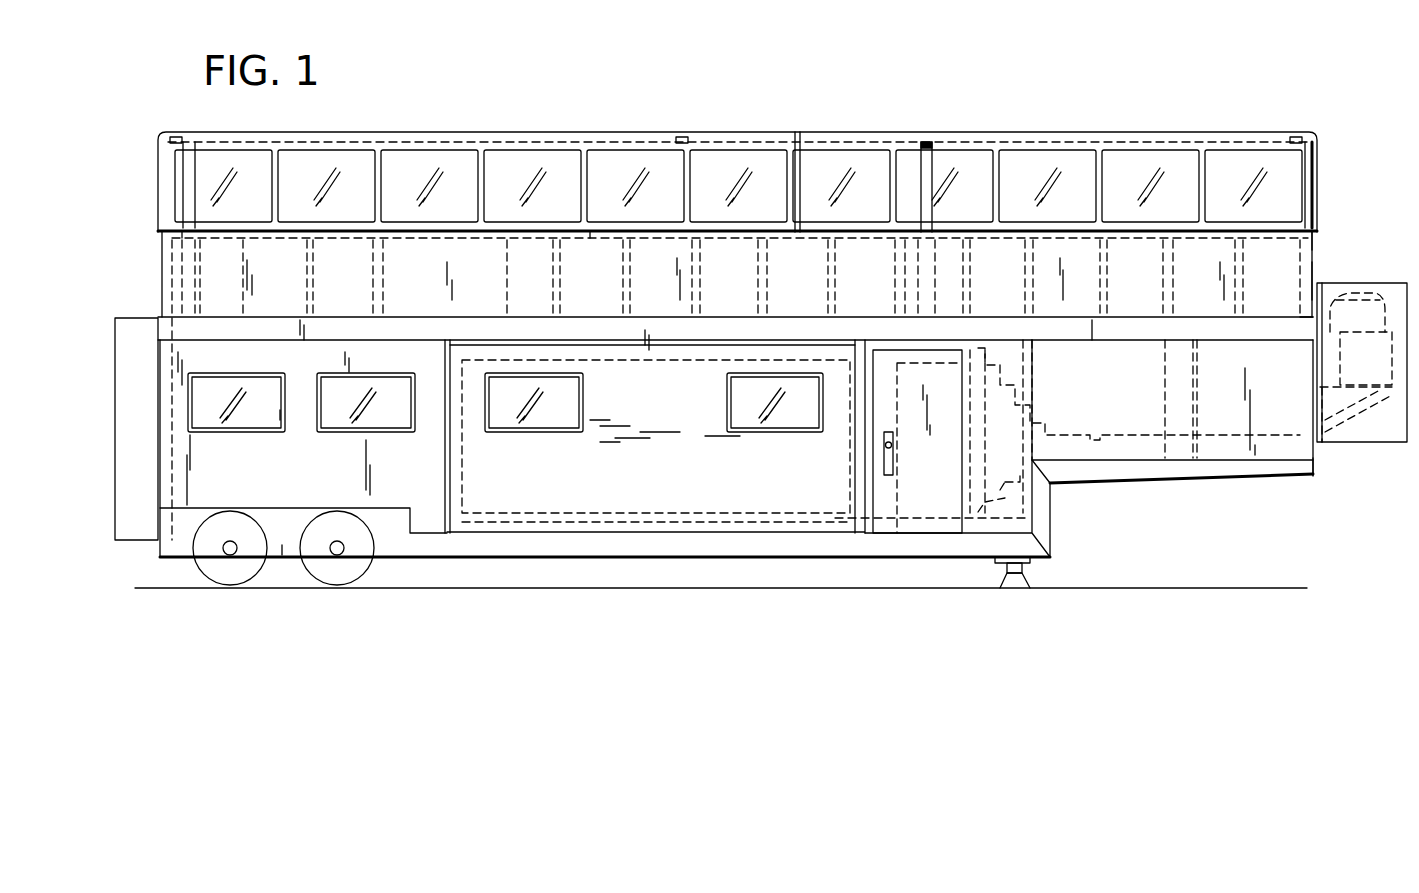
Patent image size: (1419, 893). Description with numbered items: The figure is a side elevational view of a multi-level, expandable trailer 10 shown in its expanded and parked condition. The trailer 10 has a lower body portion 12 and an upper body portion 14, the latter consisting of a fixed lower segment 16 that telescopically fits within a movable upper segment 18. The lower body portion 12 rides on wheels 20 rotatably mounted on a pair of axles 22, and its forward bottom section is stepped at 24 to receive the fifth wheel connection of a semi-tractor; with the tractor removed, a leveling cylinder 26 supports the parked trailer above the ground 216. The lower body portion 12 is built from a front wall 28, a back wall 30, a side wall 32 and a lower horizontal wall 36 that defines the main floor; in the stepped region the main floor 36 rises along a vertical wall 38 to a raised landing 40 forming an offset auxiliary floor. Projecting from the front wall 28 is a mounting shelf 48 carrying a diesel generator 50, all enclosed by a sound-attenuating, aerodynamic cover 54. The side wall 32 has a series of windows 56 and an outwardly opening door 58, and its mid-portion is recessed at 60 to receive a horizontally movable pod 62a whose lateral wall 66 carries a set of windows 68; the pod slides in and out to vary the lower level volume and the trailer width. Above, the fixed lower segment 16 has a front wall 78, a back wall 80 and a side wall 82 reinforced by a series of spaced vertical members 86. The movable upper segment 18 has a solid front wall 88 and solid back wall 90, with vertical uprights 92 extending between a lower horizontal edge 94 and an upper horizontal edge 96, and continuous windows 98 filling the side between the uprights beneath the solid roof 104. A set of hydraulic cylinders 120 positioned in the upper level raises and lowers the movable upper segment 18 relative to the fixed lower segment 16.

The multi-level, expandable trailer 10 is at (923, 103).
The lower body portion 12 is at (1312, 482).
The upper body portion 14 is at (1323, 237).
The fixed lower segment 16 is at (1319, 264).
The movable upper segment 18 is at (1299, 116).
The wheels 20 is at (340, 580).
The axles 22 is at (336, 558).
The stepped section 24 is at (1228, 478).
The leveling cylinder 26 is at (1026, 576).
The front wall 28 is at (1314, 456).
The back wall 30 is at (158, 374).
The side wall 32 is at (419, 482).
The lower horizontal wall 36 is at (890, 525).
The vertical wall 38 is at (1052, 494).
The raised landing 40 is at (1118, 434).
The mounting shelf 48 is at (1358, 414).
The diesel generator 50 is at (1370, 305).
The sound-attenuating, aerodynamic cover 54 is at (1407, 350).
The windows 56 is at (258, 432).
The outwardly opening door 58 is at (933, 512).
The recess 60 is at (667, 350).
The horizontally movable pod 62a is at (598, 534).
The lateral wall 66 is at (656, 441).
The windows 68 is at (803, 434).
The front wall 78 is at (1313, 281).
The back wall 80 is at (162, 286).
The side wall 82 is at (773, 295).
The spaced vertical members 86 is at (830, 313).
The front wall 88 is at (1318, 188).
The back wall 90 is at (162, 206).
The vertical uprights 92 is at (434, 178).
The lower horizontal edge 94 is at (605, 226).
The upper horizontal edge 96 is at (1168, 126).
The continuous windows 98 is at (730, 170).
The solid roof 104 is at (777, 133).
The hydraulic cylinders 120 is at (216, 286).
The ground 216 is at (1228, 588).